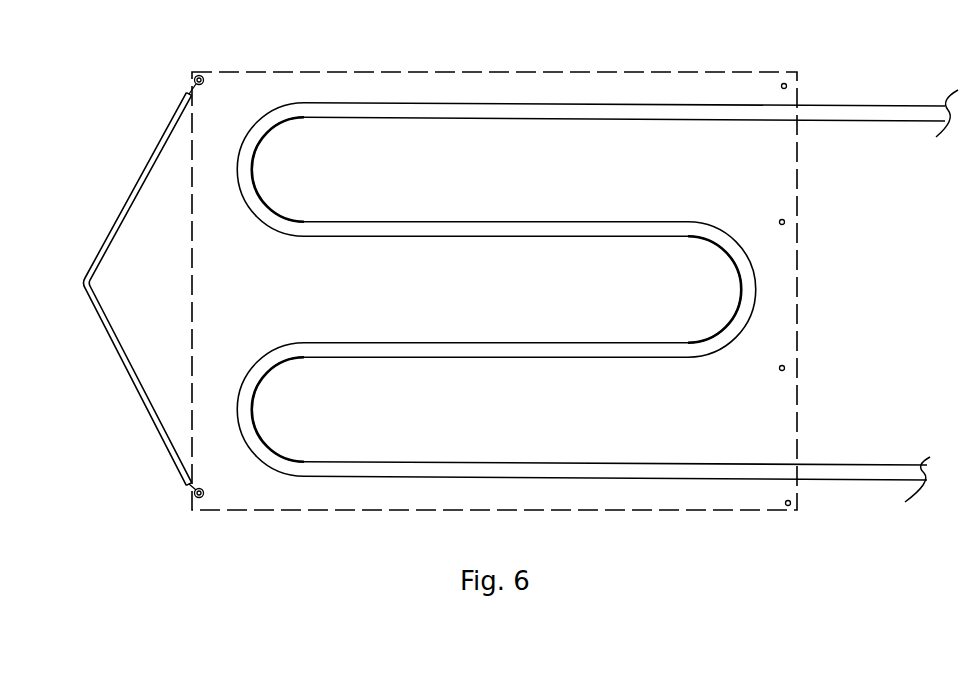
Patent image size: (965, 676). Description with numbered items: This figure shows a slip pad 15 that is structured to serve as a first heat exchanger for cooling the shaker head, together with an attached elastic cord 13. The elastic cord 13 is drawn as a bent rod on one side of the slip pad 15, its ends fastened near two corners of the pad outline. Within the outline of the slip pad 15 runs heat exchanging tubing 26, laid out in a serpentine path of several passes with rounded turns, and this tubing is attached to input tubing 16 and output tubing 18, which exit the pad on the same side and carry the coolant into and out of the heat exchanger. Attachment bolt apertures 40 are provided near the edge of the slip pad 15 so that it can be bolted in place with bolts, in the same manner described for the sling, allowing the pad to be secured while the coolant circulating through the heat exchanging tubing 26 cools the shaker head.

The elastic cord 13 is at (114, 225).
The slip pad 15 is at (533, 92).
The input tubing 16 is at (853, 470).
The output tubing 18 is at (880, 112).
The heat exchanging tubing 26 is at (527, 228).
The attachment bolt apertures 40 is at (784, 83).